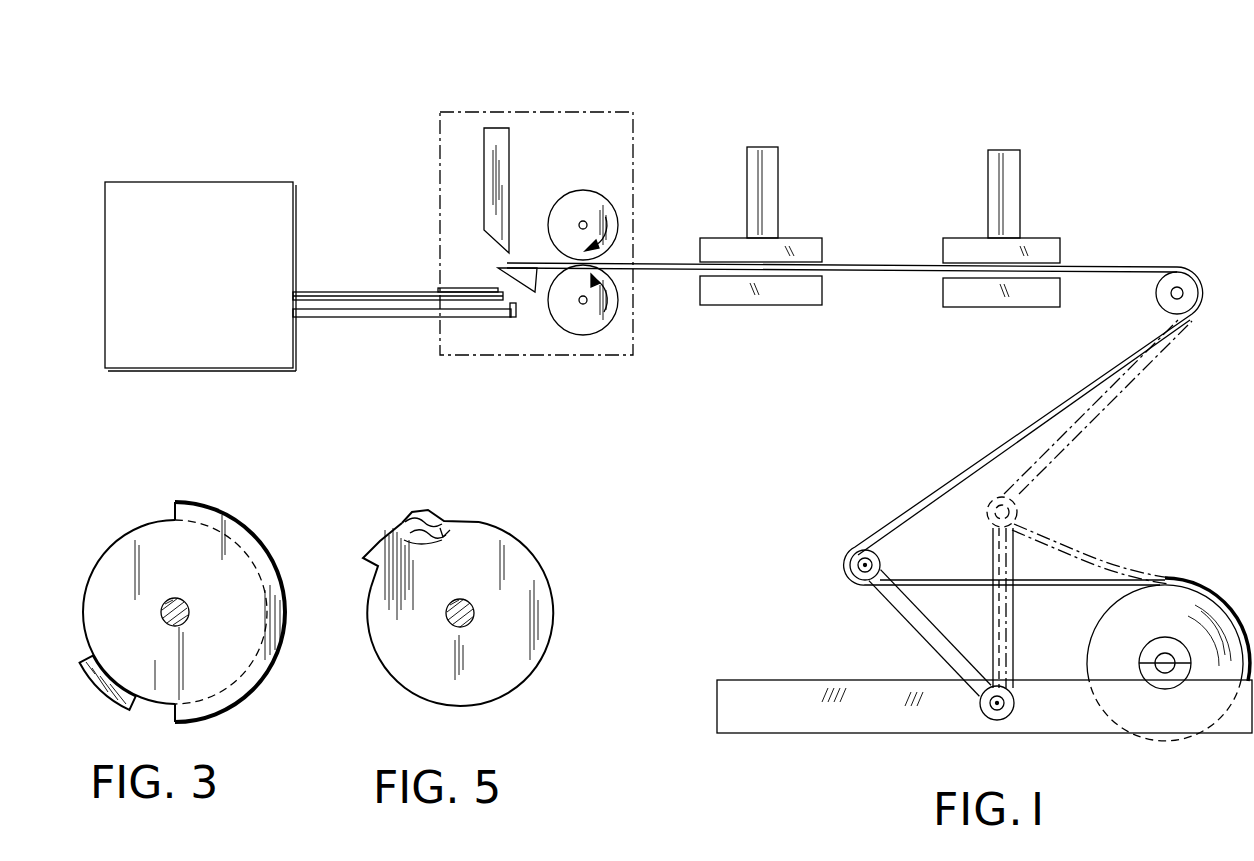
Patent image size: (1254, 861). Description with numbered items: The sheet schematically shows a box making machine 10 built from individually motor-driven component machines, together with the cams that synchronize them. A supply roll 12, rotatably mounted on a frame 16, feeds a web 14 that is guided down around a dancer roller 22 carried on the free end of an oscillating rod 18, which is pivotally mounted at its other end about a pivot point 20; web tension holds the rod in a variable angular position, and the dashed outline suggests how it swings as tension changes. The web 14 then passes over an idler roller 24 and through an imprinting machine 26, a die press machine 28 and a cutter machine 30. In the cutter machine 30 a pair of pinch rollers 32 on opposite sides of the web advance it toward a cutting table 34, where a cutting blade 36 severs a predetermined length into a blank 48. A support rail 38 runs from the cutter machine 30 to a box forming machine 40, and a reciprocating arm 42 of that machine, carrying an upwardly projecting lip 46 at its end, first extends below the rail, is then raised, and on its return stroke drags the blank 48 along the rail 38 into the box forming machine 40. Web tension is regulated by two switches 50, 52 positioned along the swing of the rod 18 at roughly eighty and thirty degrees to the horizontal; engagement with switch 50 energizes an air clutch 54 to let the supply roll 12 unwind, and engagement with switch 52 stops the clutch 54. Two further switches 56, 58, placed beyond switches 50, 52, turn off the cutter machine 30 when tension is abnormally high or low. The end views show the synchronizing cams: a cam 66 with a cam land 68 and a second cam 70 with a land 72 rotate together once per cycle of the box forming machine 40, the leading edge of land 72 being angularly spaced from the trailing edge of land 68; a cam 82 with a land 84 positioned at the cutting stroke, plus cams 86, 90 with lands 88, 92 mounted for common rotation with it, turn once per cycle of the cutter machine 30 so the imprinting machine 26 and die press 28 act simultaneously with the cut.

In FIG. 1, the box making machine 10 is at (380, 103).
In FIG. 1, the supply roll 12 is at (1192, 598).
In FIG. 1, the web 14 is at (1066, 432).
In FIG. 1, the frame 16 is at (838, 722).
In FIG. 1, the oscillating rod 18 is at (929, 636).
In FIG. 1, the pivot point 20 is at (991, 722).
In FIG. 1, the dancer roller 22 is at (853, 557).
In FIG. 1, the idler roller 24 is at (1192, 296).
In FIG. 1, the imprinting machine 26 is at (1050, 223).
In FIG. 1, the die press machine 28 is at (812, 218).
In FIG. 1, the cutter machine 30 is at (584, 105).
In FIG. 1, the pinch rollers 32 is at (610, 205).
In FIG. 1, the cutting table 34 is at (524, 274).
In FIG. 1, the cutting blade 36 is at (490, 128).
In FIG. 1, the support rail 38 is at (369, 292).
In FIG. 1, the box forming machine 40 is at (184, 287).
In FIG. 1, the reciprocating arm 42 is at (403, 318).
In FIG. 1, the lip 46 is at (518, 318).
In FIG. 1, the blank 48 is at (453, 288).
In FIG. 1, the switch 50 is at (964, 550).
In FIG. 1, the switch 52 is at (878, 612).
In FIG. 1, the air clutch 54 is at (1152, 675).
In FIG. 1, the switch 56 is at (1030, 558).
In FIG. 1, the switch 58 is at (862, 660).
In FIG. 3, the cam 66 is at (112, 560).
In FIG. 3, the cam land 68 is at (272, 563).
In FIG. 3, the second cam 70 is at (245, 664).
In FIG. 3, the land 72 is at (99, 692).
In FIG. 5, the cam 82 is at (380, 613).
In FIG. 5, the cam land 84 is at (370, 552).
In FIG. 5, the cam 86 is at (442, 540).
In FIG. 5, the land 88 is at (405, 520).
In FIG. 5, the cam 90 is at (442, 525).
In FIG. 5, the land 92 is at (422, 513).